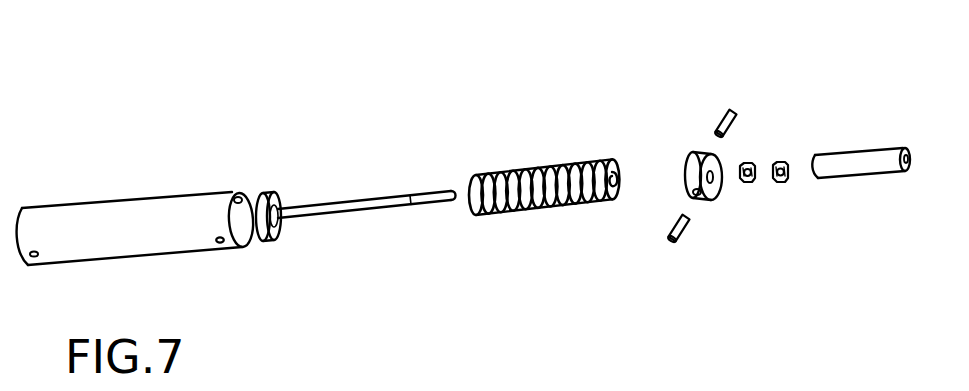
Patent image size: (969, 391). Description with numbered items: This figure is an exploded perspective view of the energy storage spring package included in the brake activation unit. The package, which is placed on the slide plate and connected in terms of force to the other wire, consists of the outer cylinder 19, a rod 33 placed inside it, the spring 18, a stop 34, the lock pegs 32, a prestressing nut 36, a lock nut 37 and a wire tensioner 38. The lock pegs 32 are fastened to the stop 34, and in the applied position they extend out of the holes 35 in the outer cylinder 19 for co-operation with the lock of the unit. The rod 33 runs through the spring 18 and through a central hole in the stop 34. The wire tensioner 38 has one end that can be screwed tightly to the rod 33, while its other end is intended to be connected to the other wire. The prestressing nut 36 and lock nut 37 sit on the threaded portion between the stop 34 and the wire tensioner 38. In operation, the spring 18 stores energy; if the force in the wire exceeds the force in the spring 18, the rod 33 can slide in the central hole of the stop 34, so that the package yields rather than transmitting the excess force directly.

The spring 18 is at (521, 165).
The outer cylinder 19 is at (128, 207).
The lock pegs 32 is at (718, 126).
The rod 33 is at (358, 205).
The stop 34 is at (713, 188).
The holes 35 is at (219, 246).
The prestressing nut 36 is at (753, 163).
The lock nut 37 is at (788, 180).
The wire tensioner 38 is at (853, 157).